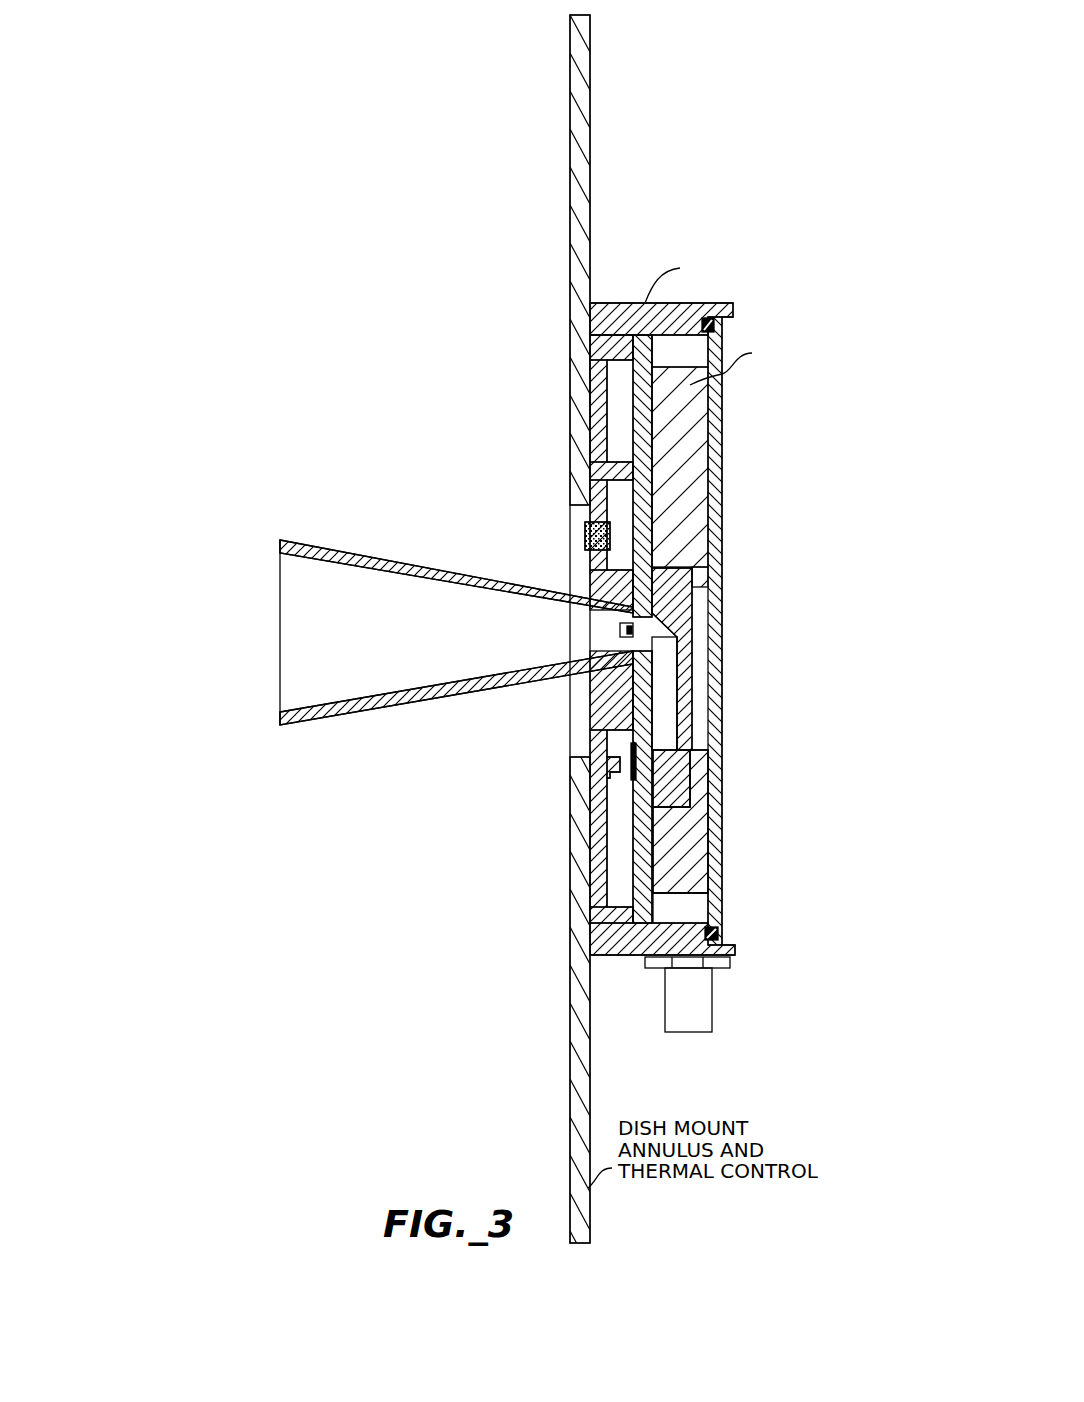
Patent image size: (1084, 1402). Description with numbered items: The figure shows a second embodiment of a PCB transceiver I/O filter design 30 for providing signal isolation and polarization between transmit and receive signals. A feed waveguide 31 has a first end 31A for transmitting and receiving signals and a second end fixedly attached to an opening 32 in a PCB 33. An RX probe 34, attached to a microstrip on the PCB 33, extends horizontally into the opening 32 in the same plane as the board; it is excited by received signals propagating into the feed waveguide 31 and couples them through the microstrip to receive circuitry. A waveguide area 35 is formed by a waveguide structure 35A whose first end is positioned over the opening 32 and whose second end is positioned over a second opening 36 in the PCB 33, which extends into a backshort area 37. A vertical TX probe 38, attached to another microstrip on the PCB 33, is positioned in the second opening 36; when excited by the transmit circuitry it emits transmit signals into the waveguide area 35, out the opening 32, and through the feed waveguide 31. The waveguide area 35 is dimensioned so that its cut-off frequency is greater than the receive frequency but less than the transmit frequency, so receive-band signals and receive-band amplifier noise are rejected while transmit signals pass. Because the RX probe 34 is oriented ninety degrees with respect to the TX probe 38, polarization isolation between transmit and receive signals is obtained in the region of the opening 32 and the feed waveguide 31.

The I/O filter design 30 is at (660, 160).
The feed waveguide 31 is at (383, 555).
The first end 31A is at (280, 688).
The opening 32 is at (588, 597).
The PCB 33 is at (645, 517).
The RX probe 34 is at (620, 632).
The waveguide area 35 is at (680, 648).
The waveguide structure 35A is at (660, 873).
The second opening 36 is at (660, 720).
The backshort area 37 is at (631, 760).
The TX probe 38 is at (690, 775).